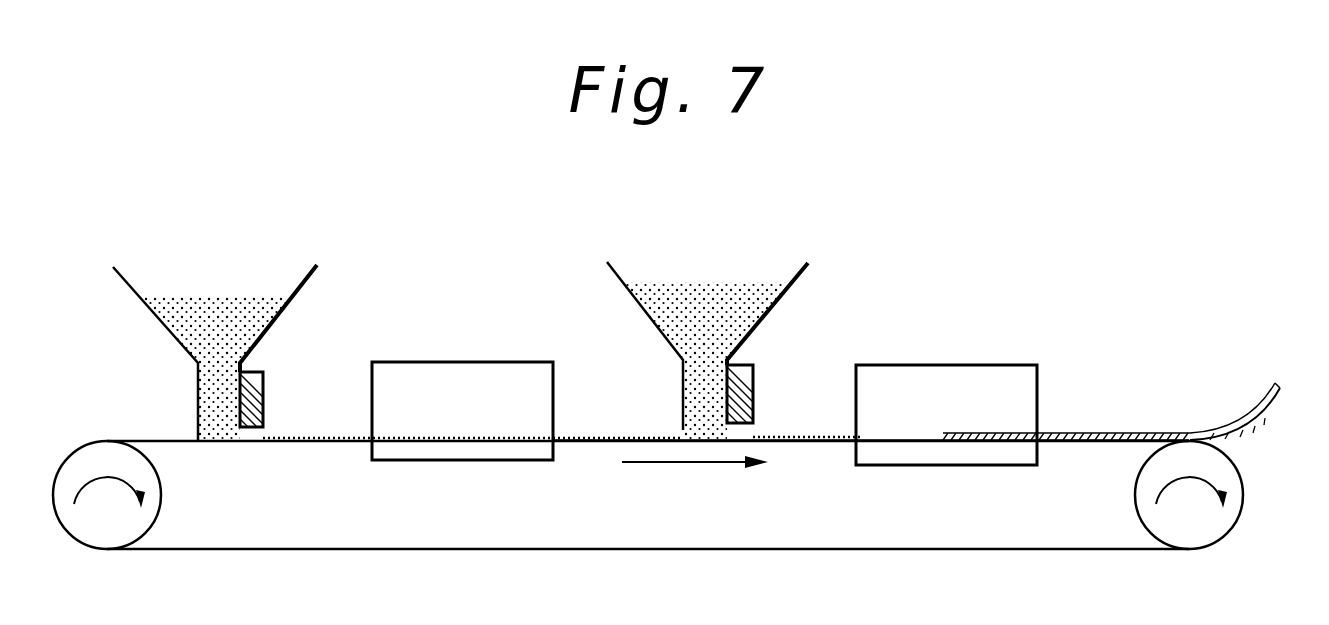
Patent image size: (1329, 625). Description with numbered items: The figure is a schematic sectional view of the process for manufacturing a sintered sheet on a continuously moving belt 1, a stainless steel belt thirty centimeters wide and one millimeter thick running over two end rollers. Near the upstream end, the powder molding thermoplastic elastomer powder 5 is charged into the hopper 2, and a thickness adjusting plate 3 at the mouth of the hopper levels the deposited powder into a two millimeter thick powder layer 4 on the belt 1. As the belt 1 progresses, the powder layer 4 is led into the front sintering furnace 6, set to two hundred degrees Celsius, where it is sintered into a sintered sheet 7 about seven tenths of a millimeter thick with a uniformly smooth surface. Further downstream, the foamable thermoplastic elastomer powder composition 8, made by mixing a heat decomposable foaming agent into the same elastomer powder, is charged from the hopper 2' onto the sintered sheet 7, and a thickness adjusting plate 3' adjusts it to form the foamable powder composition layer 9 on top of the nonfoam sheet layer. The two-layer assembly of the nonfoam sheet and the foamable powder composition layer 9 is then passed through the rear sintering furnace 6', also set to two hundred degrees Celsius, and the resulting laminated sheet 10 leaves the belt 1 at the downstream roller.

The belt 1 is at (645, 549).
The hopper 2 is at (247, 337).
The thickness adjusting plate 3 is at (246, 372).
The powder layer 4 is at (317, 438).
The powder molding thermoplastic elastomer powder 5 is at (217, 297).
The front sintering furnace 6 is at (462, 362).
The sintered sheet 7 is at (607, 440).
The foamable thermoplastic elastomer powder composition 8 is at (707, 282).
The foamable powder composition layer 9 is at (808, 437).
The hopper 2' is at (739, 322).
The thickness adjusting plate 3' is at (734, 364).
The rear sintering furnace 6' is at (946, 379).
The laminated sheet 10 is at (1130, 430).